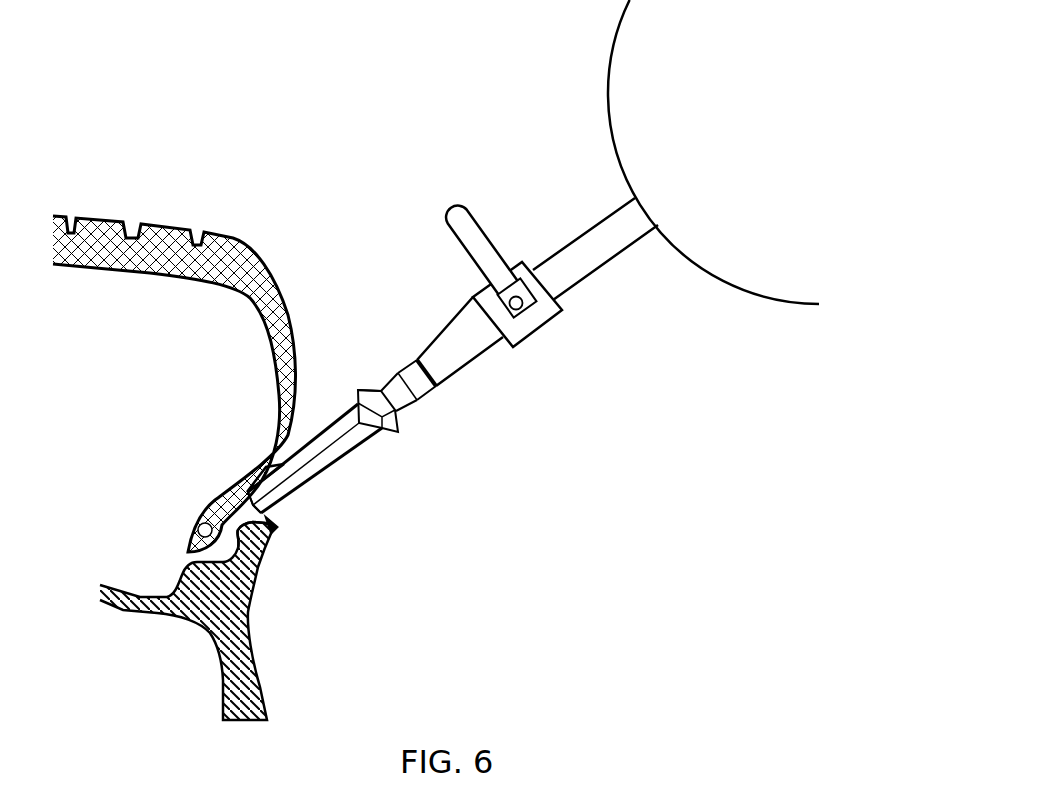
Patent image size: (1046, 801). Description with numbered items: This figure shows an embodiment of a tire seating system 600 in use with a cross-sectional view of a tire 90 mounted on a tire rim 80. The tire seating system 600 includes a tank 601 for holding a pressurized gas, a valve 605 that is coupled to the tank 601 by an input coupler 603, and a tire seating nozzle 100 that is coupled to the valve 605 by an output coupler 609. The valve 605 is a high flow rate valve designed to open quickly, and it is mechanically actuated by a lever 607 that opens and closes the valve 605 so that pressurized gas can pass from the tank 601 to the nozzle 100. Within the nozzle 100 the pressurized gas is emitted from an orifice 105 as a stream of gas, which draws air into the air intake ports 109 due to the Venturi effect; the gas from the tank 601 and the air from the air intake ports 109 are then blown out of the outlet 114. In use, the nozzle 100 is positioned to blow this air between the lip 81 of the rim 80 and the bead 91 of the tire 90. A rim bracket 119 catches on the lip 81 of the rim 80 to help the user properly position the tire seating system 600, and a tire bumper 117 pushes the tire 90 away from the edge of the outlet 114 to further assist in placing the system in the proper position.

The tire seating system 600 is at (588, 214).
The tank 601 is at (733, 302).
The input coupler 603 is at (595, 248).
The valve 605 is at (478, 301).
The lever 607 is at (455, 212).
The output coupler 609 is at (470, 337).
The tire seating nozzle 100 is at (383, 443).
The orifice 105 is at (380, 405).
The air intake ports 109 is at (392, 428).
The outlet 114 is at (263, 501).
The tire bumper 117 is at (251, 490).
The rim bracket 119 is at (278, 528).
The tire 90 is at (235, 238).
The bead 91 is at (182, 523).
The tire rim 80 is at (243, 635).
The lip 81 is at (263, 543).